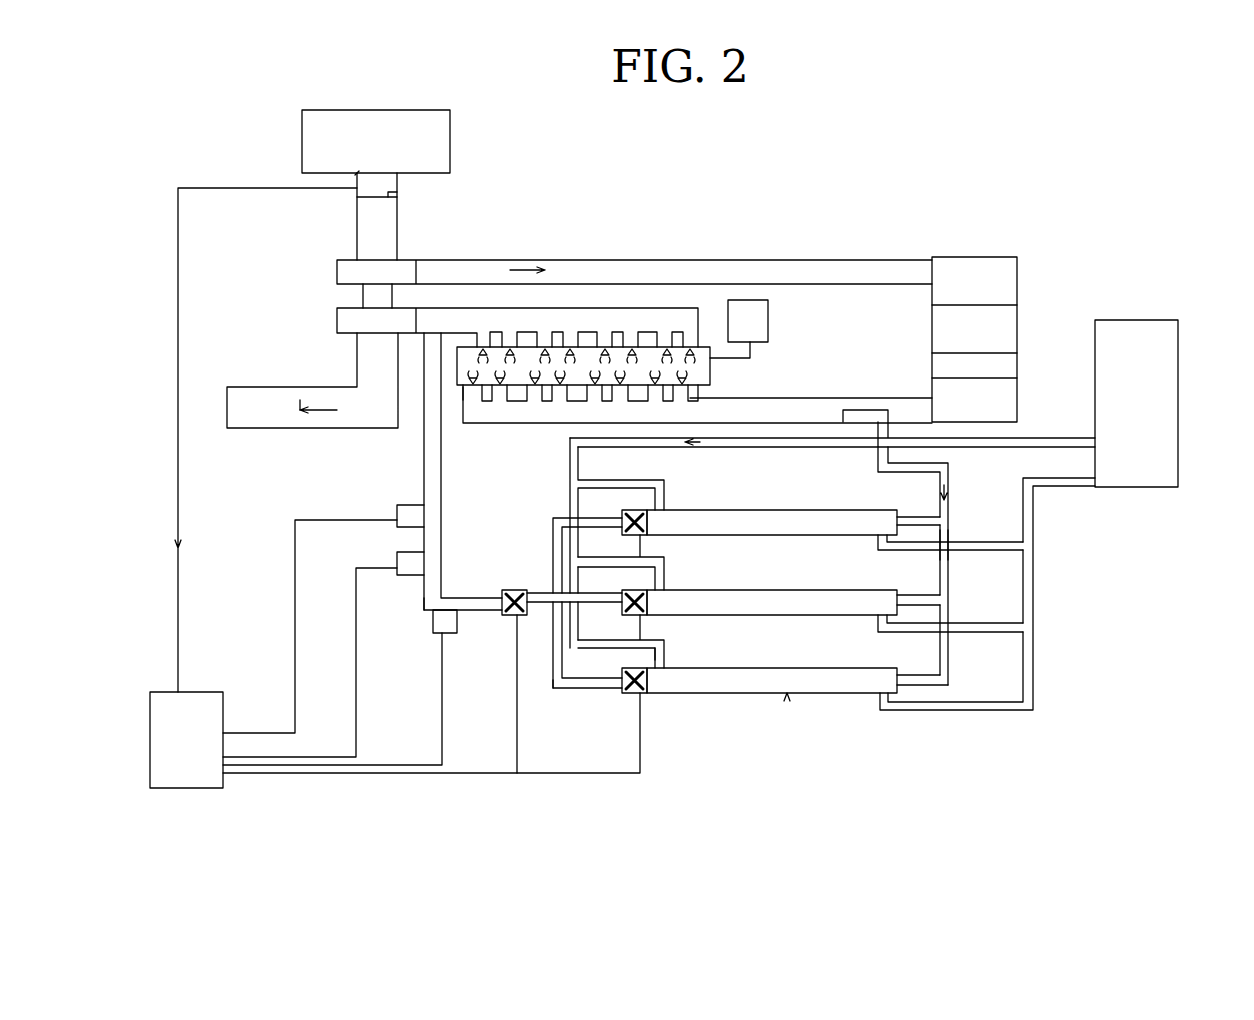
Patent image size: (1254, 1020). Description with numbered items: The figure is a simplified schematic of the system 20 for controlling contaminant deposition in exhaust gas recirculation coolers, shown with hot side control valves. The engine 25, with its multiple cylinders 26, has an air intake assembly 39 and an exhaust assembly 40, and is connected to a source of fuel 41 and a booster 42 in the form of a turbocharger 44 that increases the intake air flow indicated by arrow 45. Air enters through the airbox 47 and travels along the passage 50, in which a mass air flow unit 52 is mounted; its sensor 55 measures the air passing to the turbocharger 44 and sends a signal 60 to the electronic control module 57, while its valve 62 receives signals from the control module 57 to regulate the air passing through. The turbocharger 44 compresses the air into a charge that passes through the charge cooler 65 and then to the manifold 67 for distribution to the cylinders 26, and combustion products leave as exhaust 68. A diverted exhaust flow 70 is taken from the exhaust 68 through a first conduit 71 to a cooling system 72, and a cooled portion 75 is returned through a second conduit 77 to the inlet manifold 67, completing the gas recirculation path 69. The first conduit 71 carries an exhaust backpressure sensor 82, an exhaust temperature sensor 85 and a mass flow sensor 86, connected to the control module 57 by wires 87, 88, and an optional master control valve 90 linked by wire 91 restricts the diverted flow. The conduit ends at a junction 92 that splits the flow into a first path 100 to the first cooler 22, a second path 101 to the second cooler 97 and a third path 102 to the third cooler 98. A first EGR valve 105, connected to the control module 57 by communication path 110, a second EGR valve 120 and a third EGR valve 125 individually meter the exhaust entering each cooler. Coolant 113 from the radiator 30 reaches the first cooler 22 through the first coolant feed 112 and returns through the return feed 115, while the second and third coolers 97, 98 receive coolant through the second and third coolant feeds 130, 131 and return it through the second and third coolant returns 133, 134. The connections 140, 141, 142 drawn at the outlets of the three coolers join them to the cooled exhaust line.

The system 20 is at (478, 809).
The first cooler 22 is at (780, 510).
The engine 25 is at (463, 392).
The cylinders 26 is at (527, 333).
The radiator 30 is at (1178, 400).
The air intake assembly 39 is at (715, 258).
The exhaust assembly 40 is at (288, 377).
The source of fuel 41 is at (768, 325).
The booster 42 is at (340, 260).
The turbocharger 44 is at (347, 300).
The arrow indicating intake air flow 45 is at (520, 268).
The airbox 47 is at (452, 133).
The passage 50 is at (397, 246).
The mass air flow unit 52 is at (357, 197).
The sensor 55 is at (397, 195).
The electronic control module 57 is at (150, 712).
The signal 60 is at (178, 525).
The valve 62 is at (355, 173).
The charge cooler 65 is at (1017, 312).
The manifold 67 is at (555, 423).
The exhaust 68 is at (312, 428).
The gas recirculation path 69 is at (416, 606).
The diverted exhaust flow 70 is at (424, 352).
The first conduit 71 is at (424, 430).
The cooling system 72 is at (787, 700).
The cooled portion 75 is at (948, 485).
The second conduit 77 is at (948, 530).
The exhaust backpressure sensor 82 is at (400, 505).
The exhaust temperature sensor 85 is at (400, 552).
The mass flow sensor 86 is at (432, 625).
The wire 87 is at (295, 665).
The wire 88 is at (356, 672).
The master control valve 90 is at (498, 617).
The wire 91 is at (517, 728).
The junction 92 is at (551, 592).
The second cooler 97 is at (780, 590).
The third cooler 98 is at (780, 668).
The first path 100 is at (560, 522).
The second path 101 is at (623, 640).
The third path 102 is at (553, 686).
The first EGR valve 105 is at (648, 537).
The communication path 110 is at (370, 773).
The first coolant feed 112 is at (618, 482).
The coolant 113 is at (700, 447).
The return feed 115 is at (960, 552).
The second EGR valve 120 is at (648, 617).
The third EGR valve 125 is at (648, 697).
The second coolant feed 130 is at (608, 557).
The third coolant feed 131 is at (622, 620).
The second coolant return 133 is at (960, 632).
The third coolant return 134 is at (988, 712).
The exhaust connector 140 is at (928, 515).
The exhaust connector 141 is at (928, 595).
The exhaust connector 142 is at (928, 675).